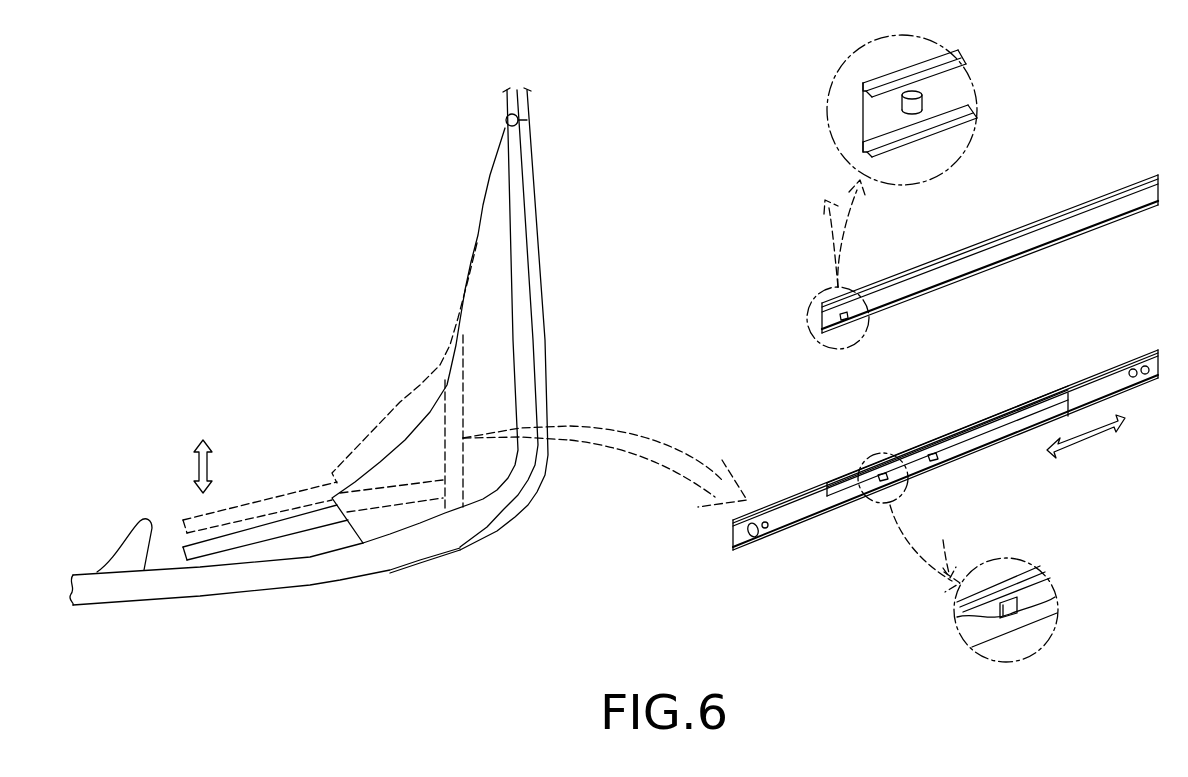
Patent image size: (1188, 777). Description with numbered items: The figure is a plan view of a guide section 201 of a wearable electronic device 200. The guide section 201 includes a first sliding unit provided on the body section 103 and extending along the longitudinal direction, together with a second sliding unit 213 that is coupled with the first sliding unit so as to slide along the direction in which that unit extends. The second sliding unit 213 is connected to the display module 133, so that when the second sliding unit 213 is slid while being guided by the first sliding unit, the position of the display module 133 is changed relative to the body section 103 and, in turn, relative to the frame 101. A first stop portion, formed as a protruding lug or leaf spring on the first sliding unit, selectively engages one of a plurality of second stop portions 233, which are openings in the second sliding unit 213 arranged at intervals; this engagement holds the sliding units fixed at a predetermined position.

The frame 101 is at (265, 598).
The body section 103 is at (497, 319).
The display module 133 is at (273, 543).
The wearable electronic device 200 is at (272, 141).
The guide section 201 is at (801, 348).
The second sliding unit 213 is at (785, 522).
The second stop portion 233 is at (957, 617).